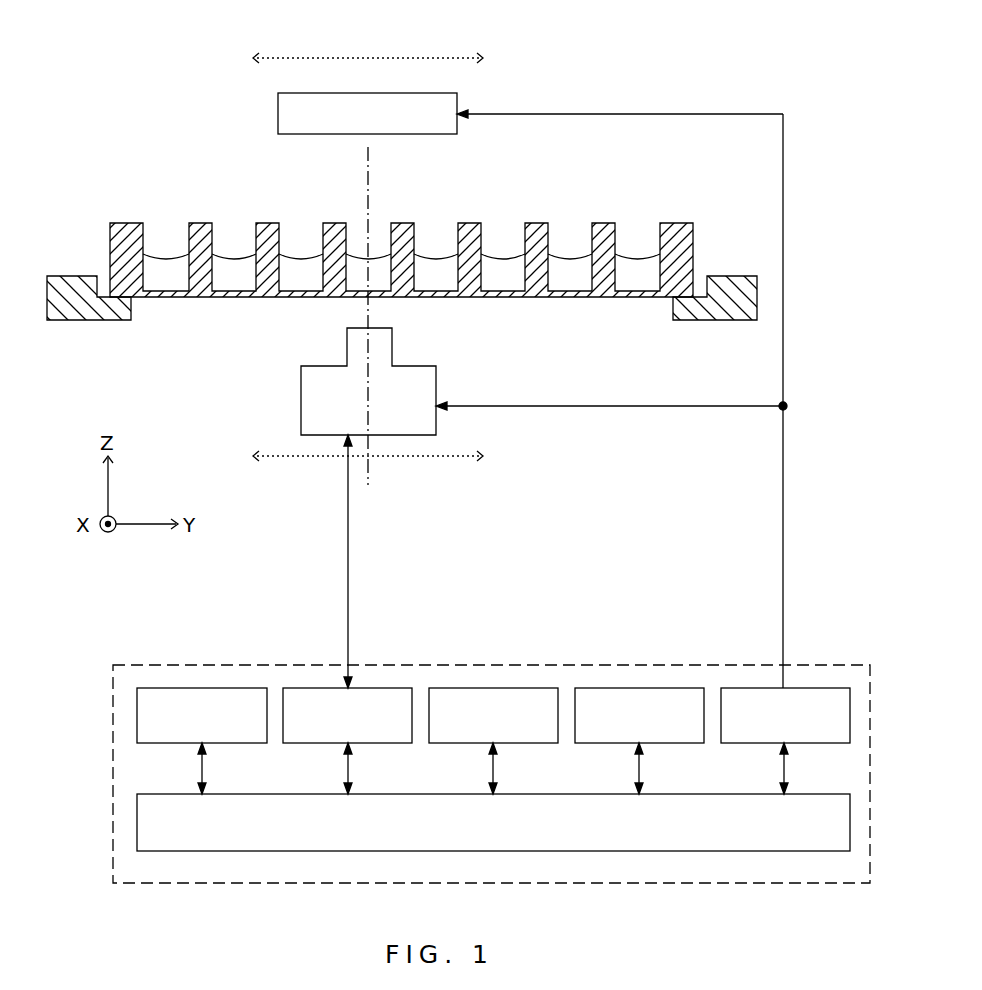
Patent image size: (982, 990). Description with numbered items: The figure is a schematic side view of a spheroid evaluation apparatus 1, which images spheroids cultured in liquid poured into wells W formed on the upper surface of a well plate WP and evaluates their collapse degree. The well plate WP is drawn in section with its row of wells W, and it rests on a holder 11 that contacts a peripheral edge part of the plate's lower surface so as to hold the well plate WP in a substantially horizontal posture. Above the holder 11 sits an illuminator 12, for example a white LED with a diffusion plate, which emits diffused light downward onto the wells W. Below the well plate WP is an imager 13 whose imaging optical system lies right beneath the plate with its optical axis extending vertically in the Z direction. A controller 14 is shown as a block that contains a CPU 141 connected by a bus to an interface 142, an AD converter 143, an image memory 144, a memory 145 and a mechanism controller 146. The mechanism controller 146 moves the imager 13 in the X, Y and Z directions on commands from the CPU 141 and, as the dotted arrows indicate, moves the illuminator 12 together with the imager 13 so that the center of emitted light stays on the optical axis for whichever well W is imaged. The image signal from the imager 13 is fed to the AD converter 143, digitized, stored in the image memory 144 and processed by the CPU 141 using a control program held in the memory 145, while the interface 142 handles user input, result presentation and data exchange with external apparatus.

The spheroid evaluation apparatus 1 is at (824, 122).
The holder 11 is at (82, 320).
The illuminator 12 is at (278, 107).
The imager 13 is at (301, 392).
The controller 14 is at (113, 708).
The CPU 141 is at (137, 833).
The interface 142 is at (222, 688).
The AD converter 143 is at (390, 688).
The image memory 144 is at (515, 688).
The memory 145 is at (660, 688).
The mechanism controller 146 is at (815, 688).
The well W is at (568, 242).
The well plate WP is at (680, 224).